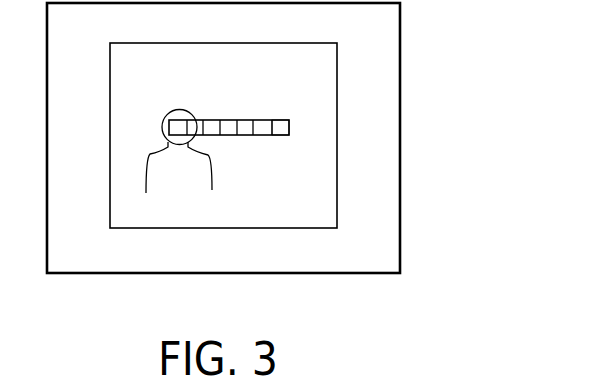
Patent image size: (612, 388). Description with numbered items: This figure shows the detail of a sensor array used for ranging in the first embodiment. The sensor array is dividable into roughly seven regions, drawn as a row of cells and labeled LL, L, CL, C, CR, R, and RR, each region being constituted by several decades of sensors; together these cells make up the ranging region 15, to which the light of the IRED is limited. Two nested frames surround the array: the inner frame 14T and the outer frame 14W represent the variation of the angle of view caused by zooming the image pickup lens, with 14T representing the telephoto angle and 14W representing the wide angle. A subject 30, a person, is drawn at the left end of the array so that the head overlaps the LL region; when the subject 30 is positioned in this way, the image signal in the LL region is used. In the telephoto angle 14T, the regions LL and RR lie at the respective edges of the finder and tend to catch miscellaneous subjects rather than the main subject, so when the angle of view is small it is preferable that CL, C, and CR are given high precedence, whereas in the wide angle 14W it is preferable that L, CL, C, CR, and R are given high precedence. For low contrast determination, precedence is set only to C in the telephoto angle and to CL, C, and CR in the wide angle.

The wide angle of view 14W is at (400, 78).
The telephoto angle of view 14T is at (337, 172).
The subject 30 is at (146, 173).
The ranging region 15 is at (207, 133).
The LL region LL is at (178, 128).
The L region L is at (194, 120).
The CL region CL is at (210, 120).
The C region C is at (228, 120).
The CR region CR is at (246, 120).
The R region R is at (262, 120).
The RR region RR is at (280, 145).